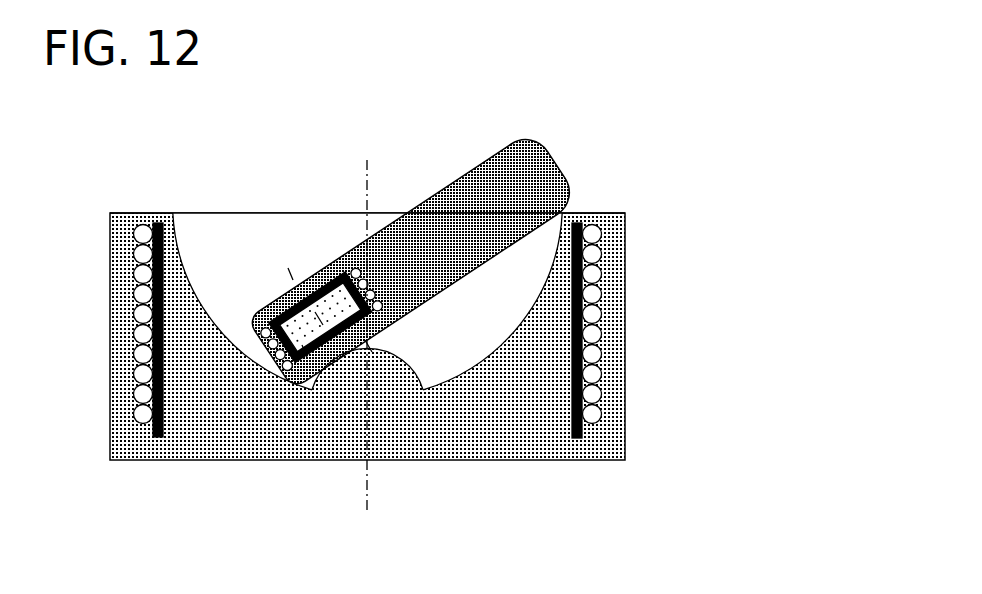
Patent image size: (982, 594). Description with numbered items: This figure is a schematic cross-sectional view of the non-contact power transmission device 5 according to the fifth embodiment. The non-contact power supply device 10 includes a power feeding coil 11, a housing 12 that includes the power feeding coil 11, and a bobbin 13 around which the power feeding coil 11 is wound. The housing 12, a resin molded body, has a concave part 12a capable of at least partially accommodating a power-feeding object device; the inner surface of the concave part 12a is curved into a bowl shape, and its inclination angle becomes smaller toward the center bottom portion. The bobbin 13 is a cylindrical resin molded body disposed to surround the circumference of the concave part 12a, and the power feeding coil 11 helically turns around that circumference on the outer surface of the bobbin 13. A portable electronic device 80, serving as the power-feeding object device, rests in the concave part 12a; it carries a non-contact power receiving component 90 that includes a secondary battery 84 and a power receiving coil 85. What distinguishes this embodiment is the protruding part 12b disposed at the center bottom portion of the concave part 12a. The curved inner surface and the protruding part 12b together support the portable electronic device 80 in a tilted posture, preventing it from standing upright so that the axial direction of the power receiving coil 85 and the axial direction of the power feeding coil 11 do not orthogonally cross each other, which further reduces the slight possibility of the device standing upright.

The non-contact power transmission device 5 is at (478, 337).
The non-contact power supply device 10 is at (441, 330).
The power feeding coil 11 is at (600, 357).
The housing 12 is at (411, 330).
The concave part 12a is at (185, 263).
The protruding part 12b is at (347, 370).
The bobbin 13 is at (590, 435).
The portable electronic device 80 is at (457, 321).
The secondary battery 84 is at (300, 383).
The power receiving coil 85 is at (267, 367).
The non-contact power receiving component 90 is at (307, 319).